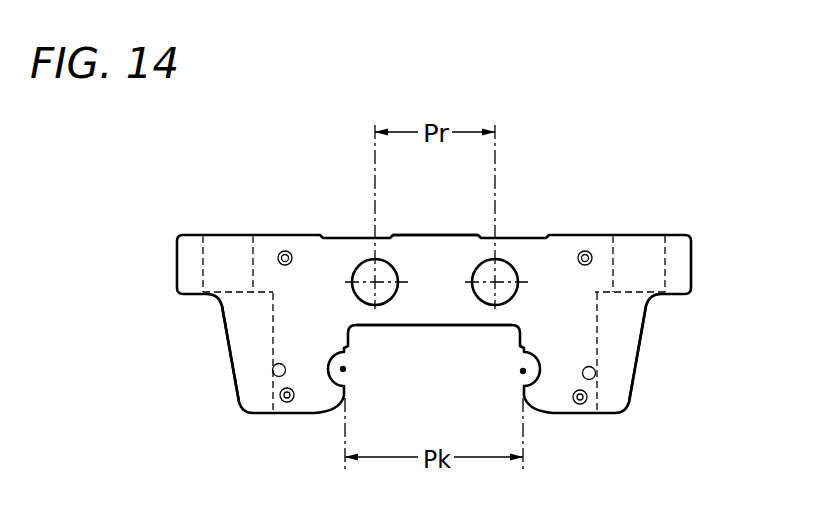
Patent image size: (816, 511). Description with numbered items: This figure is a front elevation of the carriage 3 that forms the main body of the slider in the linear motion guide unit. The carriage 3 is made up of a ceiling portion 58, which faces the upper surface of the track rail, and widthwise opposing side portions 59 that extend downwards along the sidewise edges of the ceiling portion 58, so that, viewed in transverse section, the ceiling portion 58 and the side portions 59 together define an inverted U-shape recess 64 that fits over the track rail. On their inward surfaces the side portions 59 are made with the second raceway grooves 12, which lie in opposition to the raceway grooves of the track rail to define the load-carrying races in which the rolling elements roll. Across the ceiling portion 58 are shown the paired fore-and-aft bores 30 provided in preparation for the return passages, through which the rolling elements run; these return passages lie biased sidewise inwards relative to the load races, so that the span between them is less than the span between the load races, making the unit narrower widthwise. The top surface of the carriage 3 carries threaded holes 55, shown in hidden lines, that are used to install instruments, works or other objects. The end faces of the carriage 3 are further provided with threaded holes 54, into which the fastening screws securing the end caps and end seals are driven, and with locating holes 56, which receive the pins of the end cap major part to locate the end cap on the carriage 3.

The carriage 3 is at (571, 251).
The second raceway grooves 12 is at (343, 369).
The fore-and-aft bores 30 is at (366, 272).
The threaded holes 54 is at (287, 403).
The threaded holes 55 is at (204, 255).
The locating holes 56 is at (273, 375).
The ceiling portion 58 is at (438, 272).
The side portions 59 is at (248, 347).
The inverted U-shape recess 64 is at (436, 327).